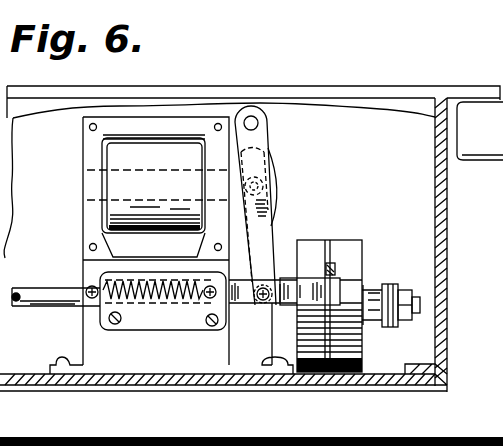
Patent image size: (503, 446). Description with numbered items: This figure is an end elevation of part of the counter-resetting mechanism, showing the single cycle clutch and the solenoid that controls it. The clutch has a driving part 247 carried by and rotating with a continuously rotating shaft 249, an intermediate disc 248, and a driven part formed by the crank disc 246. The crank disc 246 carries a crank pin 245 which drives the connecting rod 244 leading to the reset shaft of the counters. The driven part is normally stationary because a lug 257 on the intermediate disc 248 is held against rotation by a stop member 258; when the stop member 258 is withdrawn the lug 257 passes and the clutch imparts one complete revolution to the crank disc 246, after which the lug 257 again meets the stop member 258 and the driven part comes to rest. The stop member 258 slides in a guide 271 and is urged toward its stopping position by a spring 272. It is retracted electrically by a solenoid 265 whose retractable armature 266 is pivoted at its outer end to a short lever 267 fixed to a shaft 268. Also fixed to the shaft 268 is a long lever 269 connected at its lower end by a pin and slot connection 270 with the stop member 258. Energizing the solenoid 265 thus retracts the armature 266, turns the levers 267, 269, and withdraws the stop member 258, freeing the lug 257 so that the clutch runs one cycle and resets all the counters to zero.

The solenoid 265 is at (162, 165).
The shaft 268 is at (268, 123).
The short lever 267 is at (263, 147).
The retractable armature 266 is at (275, 178).
The long lever 269 is at (274, 218).
The driving part 247 is at (305, 240).
The intermediate disc 248 is at (333, 247).
The lug 257 is at (350, 247).
The crank disc 246 is at (362, 240).
The connecting rod 244 is at (414, 254).
The crank pin 245 is at (418, 308).
The continuously rotating shaft 249 is at (54, 270).
The spring 272 is at (110, 298).
The guide 271 is at (162, 316).
The pin and slot connection 270 is at (258, 305).
The stop member 258 is at (292, 300).